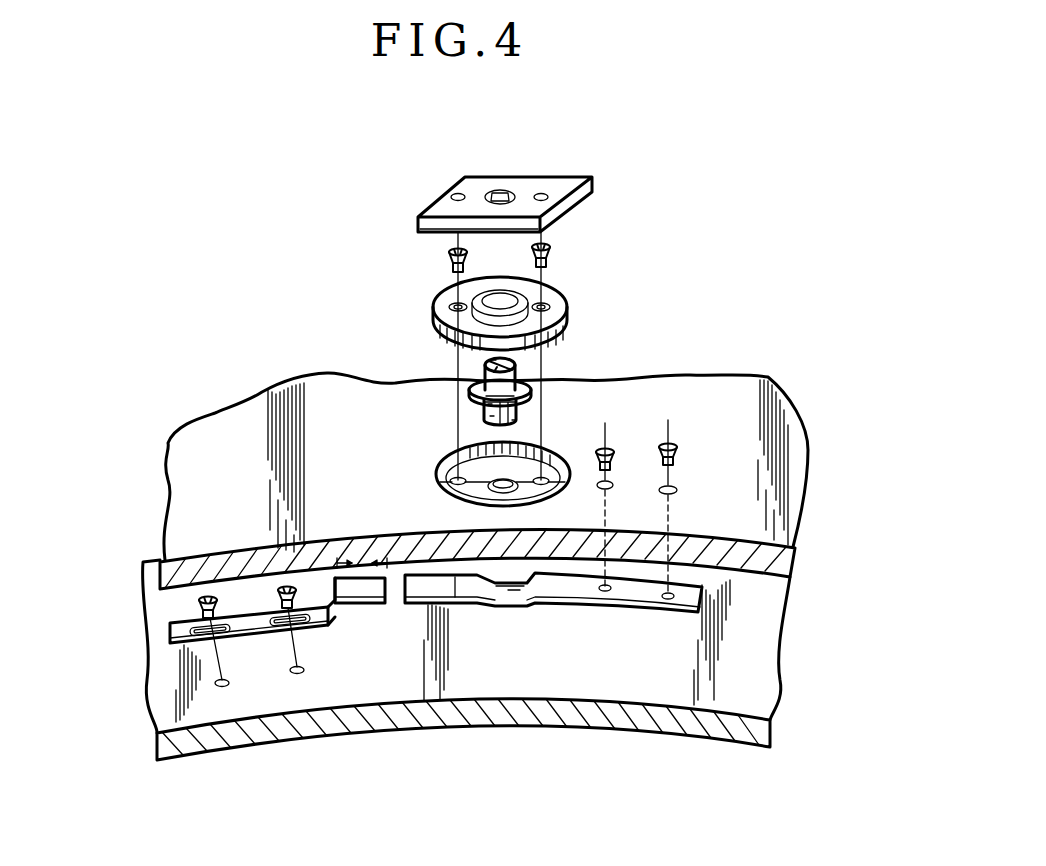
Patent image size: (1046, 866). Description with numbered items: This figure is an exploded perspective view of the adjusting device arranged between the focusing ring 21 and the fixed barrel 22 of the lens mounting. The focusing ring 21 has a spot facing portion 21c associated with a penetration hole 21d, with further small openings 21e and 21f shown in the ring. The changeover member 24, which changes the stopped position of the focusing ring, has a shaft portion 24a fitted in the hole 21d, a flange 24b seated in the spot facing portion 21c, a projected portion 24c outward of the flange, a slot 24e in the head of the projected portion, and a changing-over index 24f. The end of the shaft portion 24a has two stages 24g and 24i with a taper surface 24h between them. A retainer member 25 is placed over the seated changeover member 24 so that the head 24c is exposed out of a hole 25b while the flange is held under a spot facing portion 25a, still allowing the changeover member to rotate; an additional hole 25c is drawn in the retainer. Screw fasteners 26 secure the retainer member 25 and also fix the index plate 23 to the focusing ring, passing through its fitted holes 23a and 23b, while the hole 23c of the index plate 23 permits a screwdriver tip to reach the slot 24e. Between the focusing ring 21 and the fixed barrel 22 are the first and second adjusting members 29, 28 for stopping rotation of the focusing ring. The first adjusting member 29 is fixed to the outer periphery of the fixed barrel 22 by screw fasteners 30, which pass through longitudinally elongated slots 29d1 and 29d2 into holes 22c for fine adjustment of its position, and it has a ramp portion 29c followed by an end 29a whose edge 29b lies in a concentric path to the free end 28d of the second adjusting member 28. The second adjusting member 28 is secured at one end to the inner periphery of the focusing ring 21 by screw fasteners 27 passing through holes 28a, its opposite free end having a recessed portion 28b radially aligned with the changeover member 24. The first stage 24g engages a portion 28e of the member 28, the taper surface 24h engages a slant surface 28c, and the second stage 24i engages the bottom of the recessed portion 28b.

The focusing ring 21 is at (228, 432).
The spot facing portion 21c is at (471, 486).
The penetration hole 21d is at (492, 481).
The screw holes of recess 21e is at (450, 481).
The screw holes for screws 27 21f is at (614, 485).
The fixed barrel 22 is at (162, 746).
The screw holes in lower panel 22c is at (297, 674).
The index plate 23 is at (473, 172).
The fitted hole 23a is at (455, 194).
The fitted hole 23b is at (544, 193).
The hole 23c is at (500, 189).
The changeover member 24 is at (484, 389).
The shaft portion 24a is at (518, 412).
The flange 24b is at (520, 397).
The projected portion 24c is at (532, 389).
The slot 24e is at (514, 366).
The changing-over index 24f is at (492, 358).
The first stage 24g is at (489, 402).
The taper surface 24h is at (492, 418).
The second stage 24i is at (520, 426).
The retainer member 25 is at (485, 301).
The spot facing portion 25a is at (530, 308).
The hole 25b is at (516, 299).
The screw hole of bushing 25c is at (550, 309).
The screw fasteners 26 is at (449, 254).
The screw fasteners 27 is at (673, 441).
The second adjusting member 28 is at (553, 620).
The screw holes of strip 28a is at (665, 600).
The recessed portion 28b is at (515, 599).
The slant surface 28c is at (498, 593).
The free end 28d is at (405, 597).
The portion 28e is at (458, 596).
The first adjusting member 29 is at (255, 617).
The end 29a is at (334, 604).
The edge 29b is at (396, 596).
The ramp portion 29c is at (352, 604).
The longitudinally elongated slot 29d1 is at (186, 638).
The longitudinally elongated slot 29d2 is at (300, 625).
The screw fasteners 30 is at (200, 599).